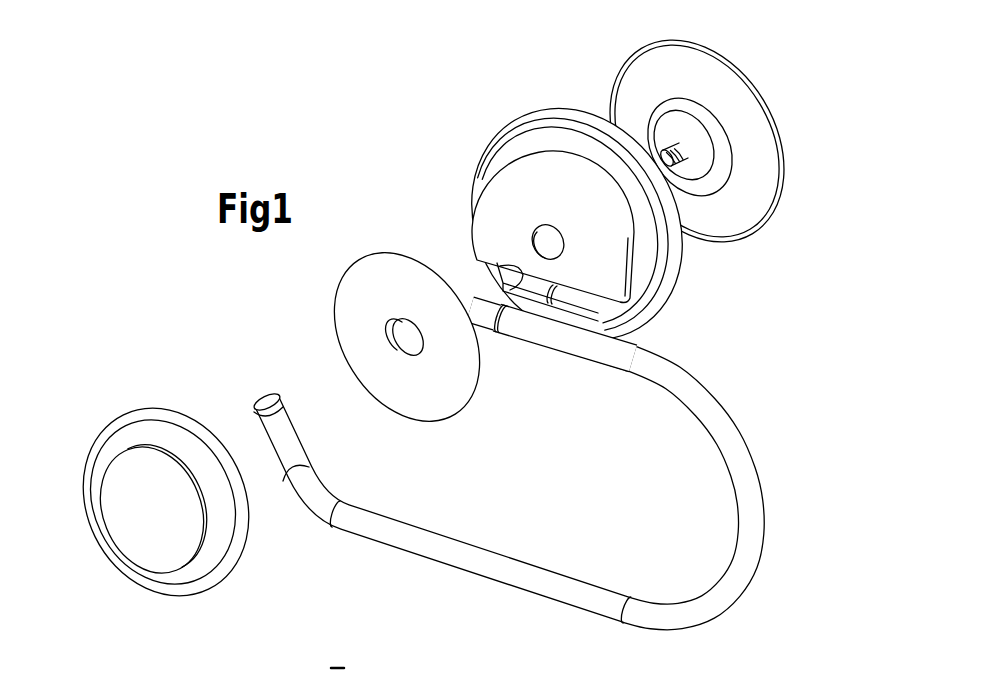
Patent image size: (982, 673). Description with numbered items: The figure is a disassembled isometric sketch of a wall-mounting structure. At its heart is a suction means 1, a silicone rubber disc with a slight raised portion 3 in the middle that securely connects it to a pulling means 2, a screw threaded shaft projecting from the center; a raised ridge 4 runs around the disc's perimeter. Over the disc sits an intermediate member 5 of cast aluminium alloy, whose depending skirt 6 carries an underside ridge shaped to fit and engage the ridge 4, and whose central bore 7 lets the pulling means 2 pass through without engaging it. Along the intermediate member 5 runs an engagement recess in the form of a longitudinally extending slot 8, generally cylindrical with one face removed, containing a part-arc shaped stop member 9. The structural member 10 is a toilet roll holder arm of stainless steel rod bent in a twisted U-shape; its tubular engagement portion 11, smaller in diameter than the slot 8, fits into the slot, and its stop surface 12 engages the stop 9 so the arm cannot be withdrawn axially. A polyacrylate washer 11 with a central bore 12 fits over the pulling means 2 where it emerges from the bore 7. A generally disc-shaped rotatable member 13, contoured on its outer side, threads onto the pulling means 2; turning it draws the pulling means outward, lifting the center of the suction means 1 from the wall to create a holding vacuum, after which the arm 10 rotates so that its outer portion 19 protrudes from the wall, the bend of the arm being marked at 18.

The suction means 1 is at (752, 142).
The pulling means 2 is at (682, 140).
The raised portion 3 is at (715, 133).
The raised ridge 4 is at (782, 197).
The intermediate member 5 is at (637, 232).
The depending skirt 6 is at (560, 108).
The central bore 7 is at (473, 220).
The engagement slot 8 is at (637, 313).
The stop member 9 is at (498, 277).
The structural member 10 is at (720, 420).
The engagement portion 11 is at (375, 288).
The stop surface 12 is at (400, 342).
The rotatable member 13 is at (156, 553).
The bend of tubular holder 18 is at (768, 533).
The outer portion 19 is at (348, 530).